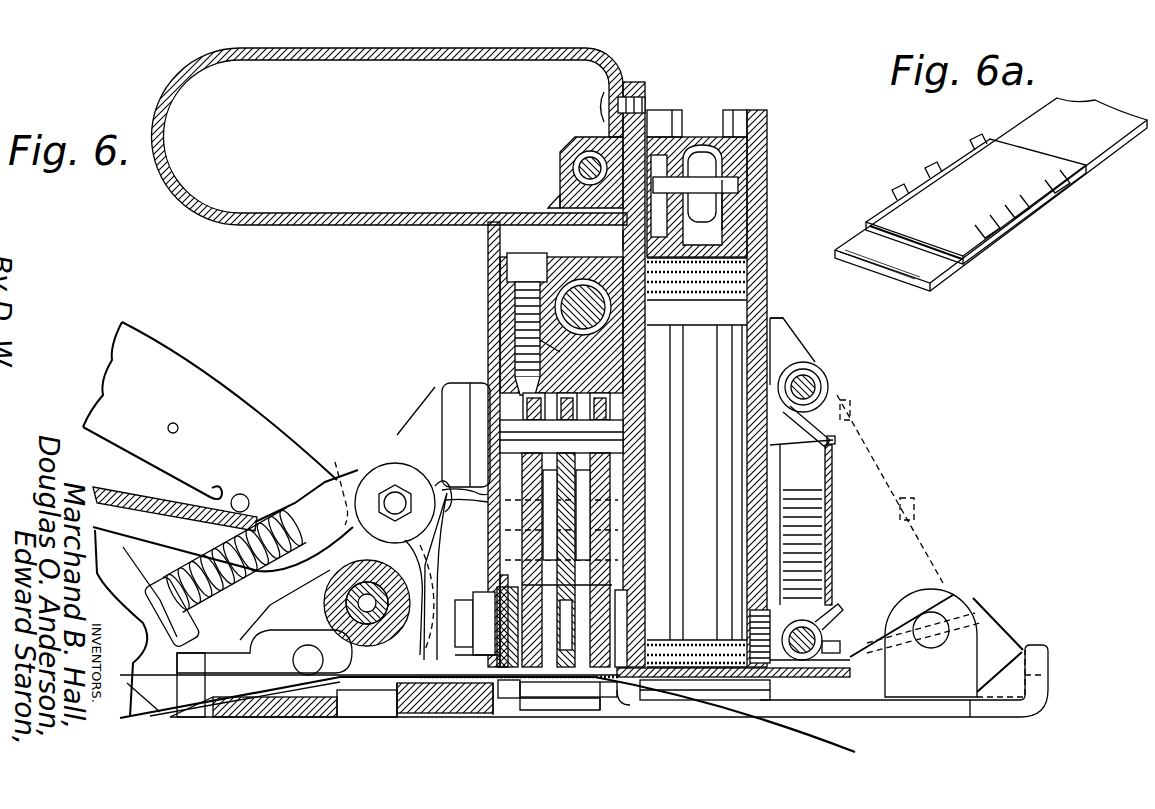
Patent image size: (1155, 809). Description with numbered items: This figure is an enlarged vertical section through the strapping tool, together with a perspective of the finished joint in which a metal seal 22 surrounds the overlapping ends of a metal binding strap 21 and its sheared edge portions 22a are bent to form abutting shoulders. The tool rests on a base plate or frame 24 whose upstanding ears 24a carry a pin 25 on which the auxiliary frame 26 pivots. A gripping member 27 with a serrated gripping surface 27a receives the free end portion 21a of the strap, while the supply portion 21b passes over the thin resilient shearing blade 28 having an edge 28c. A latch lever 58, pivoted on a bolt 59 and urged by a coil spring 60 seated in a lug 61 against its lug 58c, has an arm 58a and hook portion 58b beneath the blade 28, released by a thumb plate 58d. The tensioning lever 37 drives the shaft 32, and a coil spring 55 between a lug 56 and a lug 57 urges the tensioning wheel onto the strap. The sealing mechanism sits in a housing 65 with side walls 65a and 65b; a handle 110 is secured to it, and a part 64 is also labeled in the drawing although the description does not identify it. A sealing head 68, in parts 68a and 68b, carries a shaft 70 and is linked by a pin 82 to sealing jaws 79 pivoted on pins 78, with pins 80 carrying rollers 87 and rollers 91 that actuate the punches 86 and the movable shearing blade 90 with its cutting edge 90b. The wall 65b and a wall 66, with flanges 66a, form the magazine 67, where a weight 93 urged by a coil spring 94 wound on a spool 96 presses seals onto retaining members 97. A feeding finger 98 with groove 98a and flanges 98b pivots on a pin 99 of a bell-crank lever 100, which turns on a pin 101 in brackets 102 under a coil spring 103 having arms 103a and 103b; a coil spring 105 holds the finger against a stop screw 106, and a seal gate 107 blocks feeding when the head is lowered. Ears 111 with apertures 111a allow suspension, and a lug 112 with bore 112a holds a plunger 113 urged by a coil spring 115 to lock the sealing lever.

In FIG. 6, the handle 110 is at (437, 48).
In FIG. 6, the plunger 113 is at (590, 152).
In FIG. 6, the lug 112 is at (562, 152).
In FIG. 6, the coil spring 115 is at (580, 166).
In FIG. 6, the cylindrical bore 112a is at (560, 197).
In FIG. 6, the housing rear wall 64 is at (488, 215).
In FIG. 6, the spaced flanges 66a is at (662, 110).
In FIG. 6, the magazine 67 is at (710, 118).
In FIG. 6, the coil spring 94 is at (706, 165).
In FIG. 6, the spool 96 is at (738, 186).
In FIG. 6, the weight 93 is at (750, 205).
In FIG. 6, the wall 66 is at (762, 227).
In FIG. 6, the metal seal 22 is at (758, 276).
In FIG. 6A, the metal seal 22 is at (978, 180).
In FIG. 6, the spring arm 103a is at (772, 320).
In FIG. 6, the brackets 102 is at (795, 352).
In FIG. 6, the pin 101 is at (812, 380).
In FIG. 6, the coil spring 103 is at (816, 386).
In FIG. 6, the spring arm 103b is at (850, 442).
In FIG. 6, the bell-crank lever 100 is at (830, 512).
In FIG. 6, the housing 65 is at (486, 244).
In FIG. 6, the side wall 65a is at (498, 268).
In FIG. 6, the shaft 70 is at (513, 293).
In FIG. 6, the sealing head 68 is at (535, 247).
In FIG. 6, the side wall 65b is at (622, 236).
In FIG. 6, the sealing head part 68a is at (583, 280).
In FIG. 6, the sealing head part 68b is at (556, 352).
In FIG. 6, the lug 61 is at (433, 388).
In FIG. 6, the pin 82 is at (510, 430).
In FIG. 6, the rollers 91 is at (500, 485).
In FIG. 6, the bolt 59 is at (368, 490).
In FIG. 6, the auxiliary frame 26 is at (397, 492).
In FIG. 6, the lug 57 is at (338, 470).
In FIG. 6, the coil spring 60 is at (442, 486).
In FIG. 6, the tensioning lever 37 is at (160, 366).
In FIG. 6, the coil spring 55 is at (285, 518).
In FIG. 6, the thumb plate 58d is at (163, 497).
In FIG. 6, the latch lever 58 is at (142, 522).
In FIG. 6, the lug 56 is at (155, 605).
In FIG. 6, the lug 58c is at (445, 576).
In FIG. 6, the arm 58a is at (448, 594).
In FIG. 6, the movable shearing blade 90 is at (470, 600).
In FIG. 6, the cutting edge 90b is at (500, 660).
In FIG. 6, the rollers 87 is at (585, 495).
In FIG. 6, the pins 80 is at (608, 537).
In FIG. 6, the sealing jaws 79 is at (598, 572).
In FIG. 6, the punches 86 is at (592, 592).
In FIG. 6, the pins or bolts 78 is at (620, 620).
In FIG. 6, the shaft 32 is at (340, 602).
In FIG. 6, the upstanding ears 24a is at (268, 648).
In FIG. 6, the pin 99 is at (802, 634).
In FIG. 6, the coil spring 105 is at (840, 605).
In FIG. 6, the flanges 98b is at (830, 642).
In FIG. 6, the apertures 111a is at (938, 628).
In FIG. 6, the projecting ears 111 is at (980, 640).
In FIG. 6, the adjustable stop screw 106 is at (790, 702).
In FIG. 6, the supply portion 21b is at (145, 710).
In FIG. 6, the free end portion 21a is at (200, 703).
In FIG. 6, the pin 25 is at (255, 717).
In FIG. 6, the serrated gripping surface 27a is at (340, 717).
In FIG. 6, the gripping member 27 is at (360, 705).
In FIG. 6, the shearing blade 28 is at (395, 717).
In FIG. 6, the hook portion 58b is at (446, 713).
In FIG. 6, the base plate or frame 24 is at (500, 700).
In FIG. 6, the edge 28c is at (520, 700).
In FIG. 6, the groove 98a is at (600, 695).
In FIG. 6, the seal gate 107 is at (630, 705).
In FIG. 6, the hook-shaped retaining members 97 is at (693, 700).
In FIG. 6, the feeding finger 98 is at (755, 677).
In FIG. 6A, the metal binding strap 21 is at (938, 258).
In FIG. 6A, the deflected portions 22a is at (1028, 230).